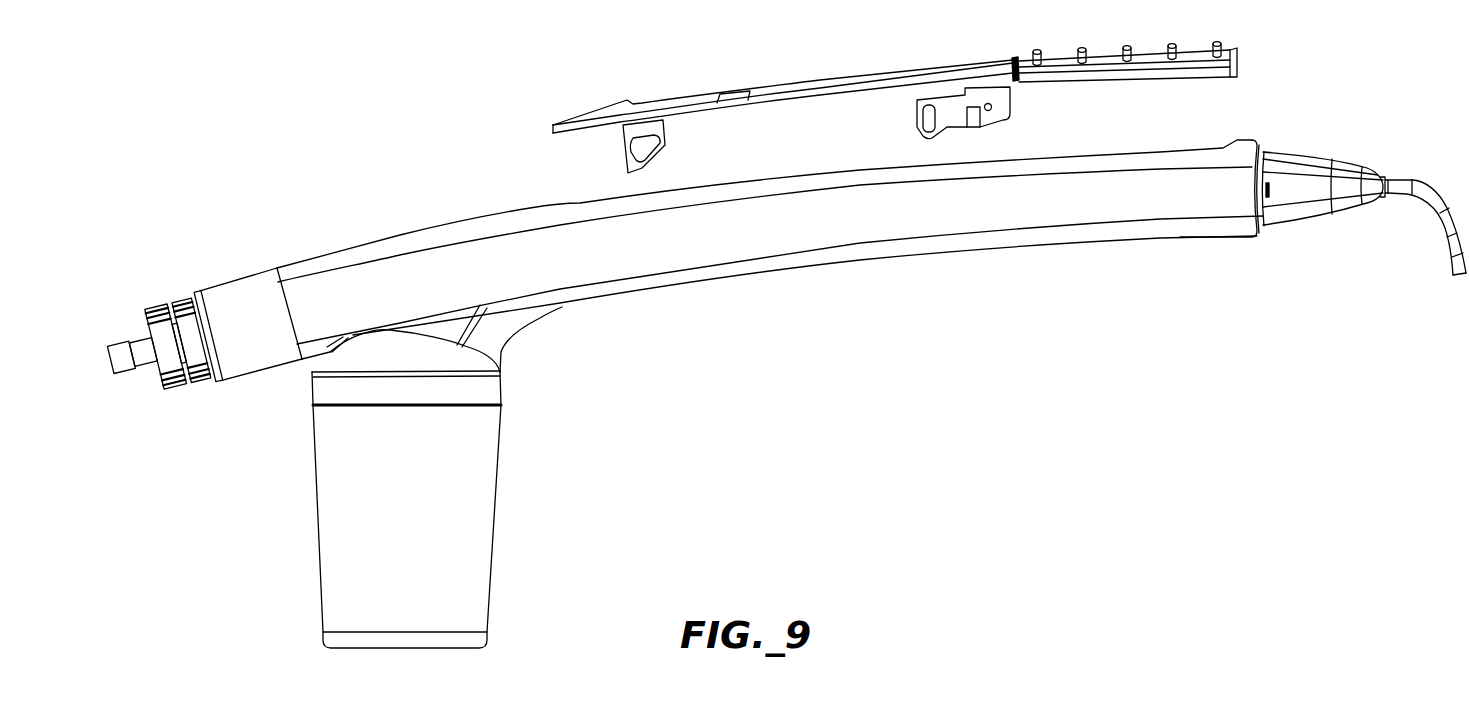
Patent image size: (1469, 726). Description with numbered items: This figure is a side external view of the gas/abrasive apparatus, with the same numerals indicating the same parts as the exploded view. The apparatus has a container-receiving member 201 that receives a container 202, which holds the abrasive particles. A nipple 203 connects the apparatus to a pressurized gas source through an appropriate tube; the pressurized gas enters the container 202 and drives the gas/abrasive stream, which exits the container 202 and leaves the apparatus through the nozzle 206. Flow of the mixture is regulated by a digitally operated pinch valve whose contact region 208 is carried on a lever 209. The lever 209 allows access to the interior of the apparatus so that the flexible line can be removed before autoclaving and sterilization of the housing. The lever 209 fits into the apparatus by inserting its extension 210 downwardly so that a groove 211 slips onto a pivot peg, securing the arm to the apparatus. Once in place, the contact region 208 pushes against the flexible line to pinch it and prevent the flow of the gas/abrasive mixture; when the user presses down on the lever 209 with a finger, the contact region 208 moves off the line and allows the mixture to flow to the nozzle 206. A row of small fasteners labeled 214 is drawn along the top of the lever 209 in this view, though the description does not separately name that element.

The container-receiving member 201 is at (503, 387).
The container 202 is at (495, 517).
The nipple 203 is at (126, 373).
The nozzle 206 is at (1445, 248).
The contact region 208 is at (923, 131).
The lever 209 is at (850, 72).
The extension 210 is at (622, 136).
The groove 211 is at (622, 155).
The light emitters 214 is at (1152, 48).